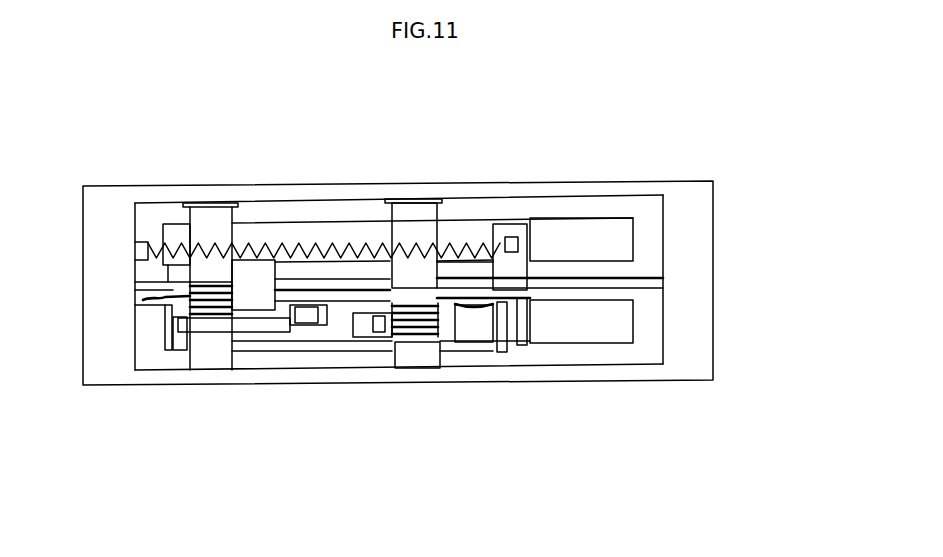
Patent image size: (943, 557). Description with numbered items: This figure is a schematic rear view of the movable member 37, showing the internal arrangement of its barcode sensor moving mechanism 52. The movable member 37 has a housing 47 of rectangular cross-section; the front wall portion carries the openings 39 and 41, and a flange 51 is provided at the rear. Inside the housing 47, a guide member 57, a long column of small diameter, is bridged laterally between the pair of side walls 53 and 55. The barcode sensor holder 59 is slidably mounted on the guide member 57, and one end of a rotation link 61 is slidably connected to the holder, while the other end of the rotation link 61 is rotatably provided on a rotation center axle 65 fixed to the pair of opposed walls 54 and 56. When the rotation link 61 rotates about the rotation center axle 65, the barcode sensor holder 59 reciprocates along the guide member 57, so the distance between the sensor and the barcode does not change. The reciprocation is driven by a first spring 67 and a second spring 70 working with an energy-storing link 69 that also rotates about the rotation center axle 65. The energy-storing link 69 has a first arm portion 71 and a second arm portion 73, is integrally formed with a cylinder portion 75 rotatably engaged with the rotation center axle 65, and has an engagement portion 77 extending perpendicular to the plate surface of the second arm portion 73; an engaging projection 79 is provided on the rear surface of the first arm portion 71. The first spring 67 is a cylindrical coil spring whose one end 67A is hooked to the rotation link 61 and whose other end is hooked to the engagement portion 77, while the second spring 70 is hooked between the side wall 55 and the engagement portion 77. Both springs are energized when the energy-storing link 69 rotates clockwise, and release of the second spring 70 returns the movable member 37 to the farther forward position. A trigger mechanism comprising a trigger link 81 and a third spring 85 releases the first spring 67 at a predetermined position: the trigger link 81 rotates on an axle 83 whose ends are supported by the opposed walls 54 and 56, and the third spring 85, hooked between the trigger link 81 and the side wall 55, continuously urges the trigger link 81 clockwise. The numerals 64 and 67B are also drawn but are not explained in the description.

The movable member 37 is at (716, 214).
The opening 39 is at (350, 222).
The opening 41 is at (574, 344).
The housing 47 is at (565, 186).
The flange 51 is at (698, 284).
The barcode sensor moving mechanism 52 is at (465, 226).
The side wall 53 is at (673, 222).
The opposed wall 54 is at (415, 192).
The side wall 55 is at (100, 228).
The opposed wall 56 is at (141, 378).
The guide member 57 is at (592, 277).
The barcode sensor holder 59 is at (257, 268).
The rotation link 61 is at (306, 340).
The pin 64 is at (358, 327).
The rotation center axle 65 is at (422, 358).
The first spring 67 is at (405, 338).
The one end of the metal wire of the first spring 67A is at (368, 340).
The motor mount 67B is at (453, 306).
The energy-storing link 69 is at (325, 323).
The second spring 70 is at (290, 333).
The first arm portion 71 is at (322, 310).
The second arm portion 73 is at (510, 352).
The cylinder portion 75 is at (446, 207).
The engagement portion 77 is at (518, 350).
The engaging projection 79 is at (287, 332).
The trigger link 81 is at (258, 323).
The axle 83 is at (208, 225).
The third spring 85 is at (188, 320).